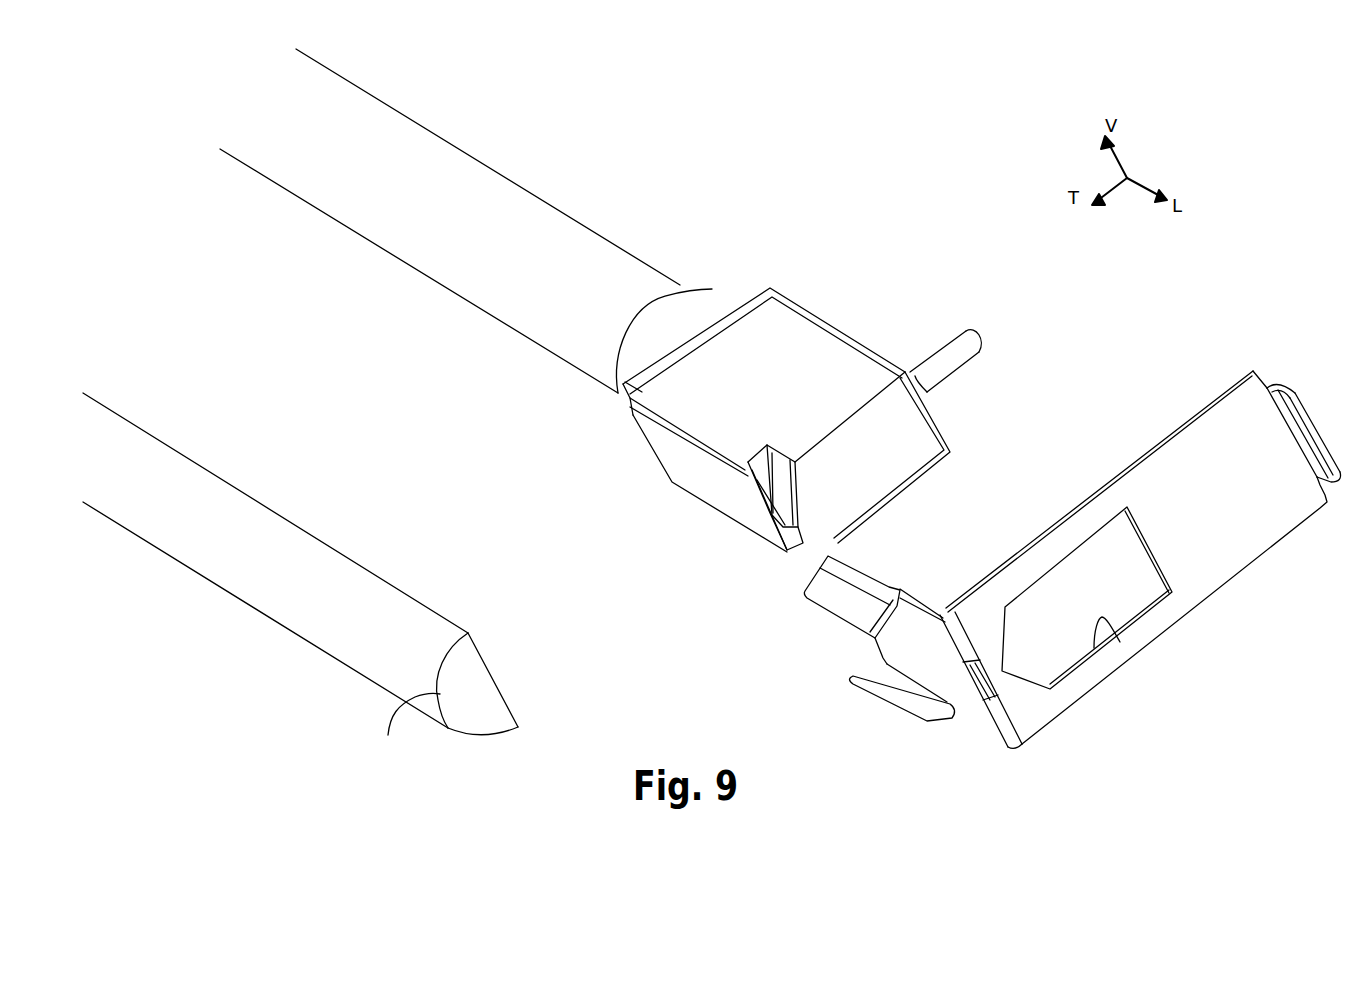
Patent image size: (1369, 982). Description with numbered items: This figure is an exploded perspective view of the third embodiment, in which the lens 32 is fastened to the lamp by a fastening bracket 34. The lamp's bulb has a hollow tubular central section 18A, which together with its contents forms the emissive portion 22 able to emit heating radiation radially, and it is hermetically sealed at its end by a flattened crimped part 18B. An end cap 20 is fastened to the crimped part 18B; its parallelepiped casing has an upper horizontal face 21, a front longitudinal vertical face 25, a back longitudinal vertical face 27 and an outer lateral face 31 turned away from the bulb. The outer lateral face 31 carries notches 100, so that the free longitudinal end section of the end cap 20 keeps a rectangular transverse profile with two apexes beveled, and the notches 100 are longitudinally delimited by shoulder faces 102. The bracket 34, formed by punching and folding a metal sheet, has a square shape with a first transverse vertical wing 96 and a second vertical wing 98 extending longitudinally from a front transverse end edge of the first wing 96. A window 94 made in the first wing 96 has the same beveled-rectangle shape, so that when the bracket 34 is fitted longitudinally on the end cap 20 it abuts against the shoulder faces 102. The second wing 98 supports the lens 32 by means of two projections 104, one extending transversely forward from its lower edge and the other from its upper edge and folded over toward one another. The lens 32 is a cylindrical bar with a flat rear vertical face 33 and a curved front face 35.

The emissive portion 22 is at (487, 221).
The hollow tubular central section 18A is at (537, 243).
The crimped part 18B is at (686, 309).
The end cap 20 is at (804, 422).
The upper horizontal face 21 is at (788, 345).
The front longitudinal vertical face 25 is at (680, 452).
The back longitudinal vertical face 27 is at (885, 355).
The outer lateral face 31 is at (895, 425).
The notch 100 is at (792, 520).
The shoulder face 102 is at (758, 478).
The fastening bracket 34 is at (1070, 555).
The first transverse vertical wing 96 is at (1238, 530).
The window 94 is at (1102, 620).
The second vertical wing 98 is at (925, 650).
The projection 104 is at (850, 607).
The lens 32 is at (336, 591).
The flat rear vertical face 33 is at (490, 662).
The curved front face 35 is at (410, 695).